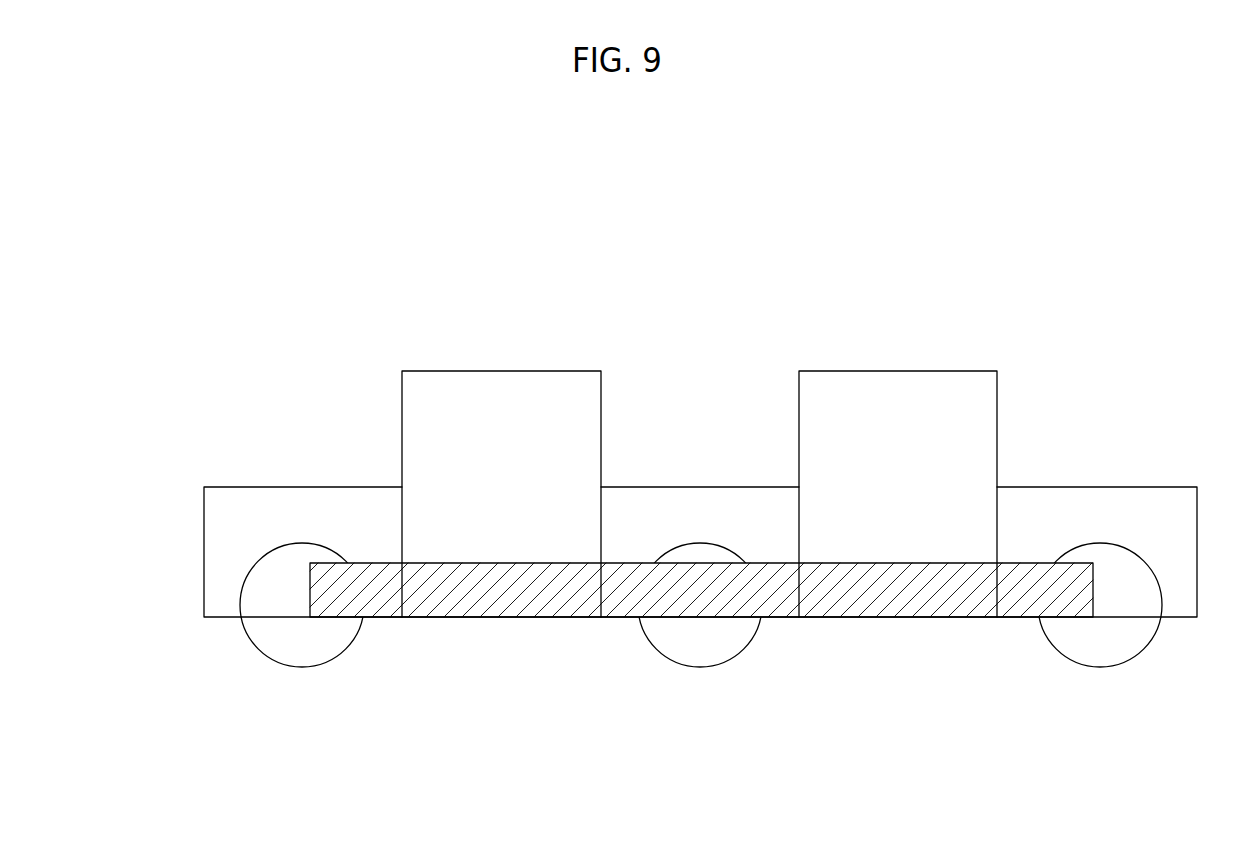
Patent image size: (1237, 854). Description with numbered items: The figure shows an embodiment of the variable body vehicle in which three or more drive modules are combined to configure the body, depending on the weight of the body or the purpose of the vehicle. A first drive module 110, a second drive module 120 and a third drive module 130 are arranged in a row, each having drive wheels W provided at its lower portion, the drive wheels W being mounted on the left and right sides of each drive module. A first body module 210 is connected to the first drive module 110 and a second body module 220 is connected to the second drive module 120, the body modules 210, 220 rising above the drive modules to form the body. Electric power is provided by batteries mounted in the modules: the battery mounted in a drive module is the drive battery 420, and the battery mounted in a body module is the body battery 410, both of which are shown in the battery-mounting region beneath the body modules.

The first drive module 110 is at (257, 490).
The second drive module 120 is at (697, 490).
The third drive module 130 is at (1105, 490).
The first body module 210 is at (543, 387).
The second body module 220 is at (875, 387).
The body battery 410 is at (492, 607).
The drive battery 420 is at (384, 607).
The drive wheels W is at (302, 668).